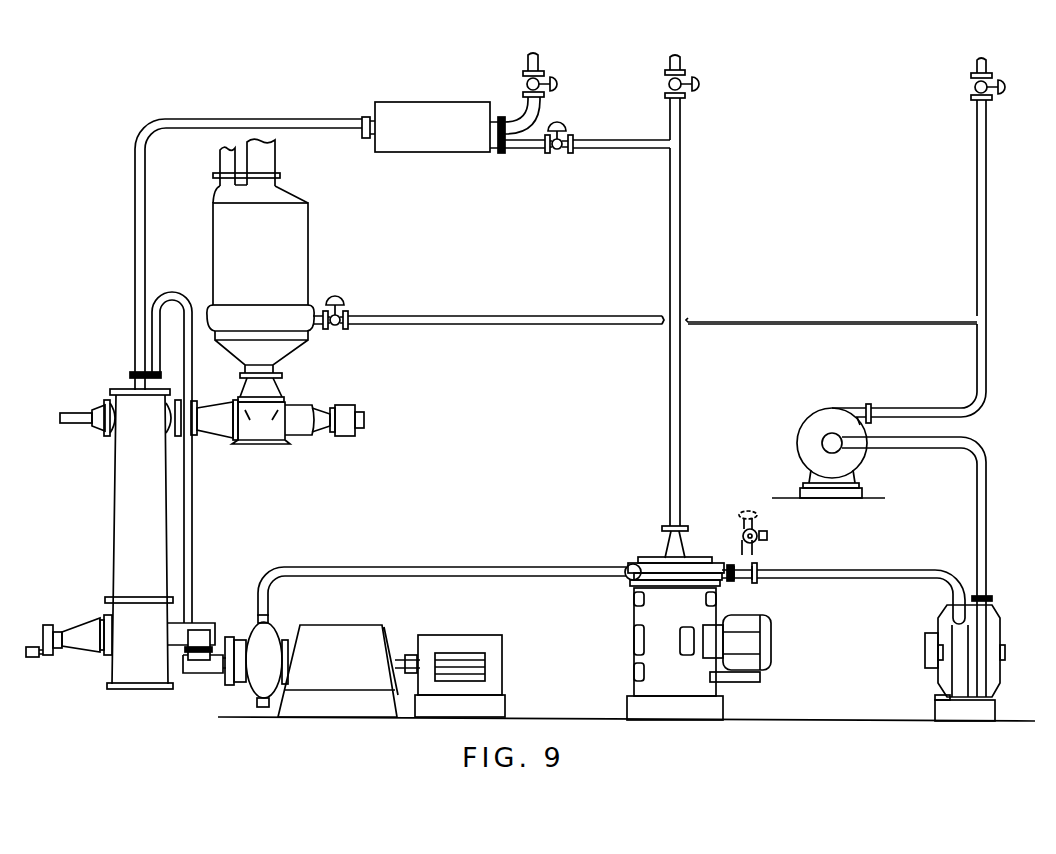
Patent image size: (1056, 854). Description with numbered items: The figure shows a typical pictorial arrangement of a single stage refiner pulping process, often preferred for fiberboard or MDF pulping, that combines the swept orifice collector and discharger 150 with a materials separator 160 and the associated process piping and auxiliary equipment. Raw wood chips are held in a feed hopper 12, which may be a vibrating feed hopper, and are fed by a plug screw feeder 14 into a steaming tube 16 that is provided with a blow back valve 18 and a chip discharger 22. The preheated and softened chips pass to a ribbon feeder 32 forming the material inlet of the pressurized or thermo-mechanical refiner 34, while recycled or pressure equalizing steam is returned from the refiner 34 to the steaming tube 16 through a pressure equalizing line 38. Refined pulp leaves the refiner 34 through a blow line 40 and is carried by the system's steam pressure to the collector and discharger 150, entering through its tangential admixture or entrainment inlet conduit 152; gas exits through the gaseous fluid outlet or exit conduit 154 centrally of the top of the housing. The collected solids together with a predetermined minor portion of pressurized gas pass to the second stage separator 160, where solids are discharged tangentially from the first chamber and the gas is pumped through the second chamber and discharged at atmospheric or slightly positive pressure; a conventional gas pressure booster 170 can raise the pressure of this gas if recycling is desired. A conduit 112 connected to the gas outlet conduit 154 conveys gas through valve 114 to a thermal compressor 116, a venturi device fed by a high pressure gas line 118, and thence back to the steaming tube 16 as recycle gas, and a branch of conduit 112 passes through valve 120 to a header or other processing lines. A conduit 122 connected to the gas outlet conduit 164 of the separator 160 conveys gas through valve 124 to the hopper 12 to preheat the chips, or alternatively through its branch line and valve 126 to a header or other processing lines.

The feed hopper 12 is at (308, 237).
The plug screw feeder 14 is at (313, 404).
The steaming tube 16 is at (116, 490).
The blow back valve 18 is at (100, 407).
The chip discharger 22 is at (91, 606).
The ribbon feeder 32 is at (213, 674).
The refiner 34 is at (278, 627).
The pressure equalizing line 38 is at (193, 489).
The blow line 40 is at (408, 566).
The conduit 112 is at (682, 406).
The valve 114 is at (565, 124).
The thermal compressor 116 is at (458, 102).
The high pressure gas line 118 is at (536, 121).
The valve 120 is at (700, 82).
The conduit 122 is at (988, 389).
The valve 124 is at (340, 299).
The valve 126 is at (1002, 82).
The swept orifice collector and discharger 150 is at (622, 588).
The tangential admixture or entrainment inlet conduit 152 is at (628, 566).
The gaseous fluid outlet or exit conduit 154 is at (683, 552).
The materials separator 160 is at (937, 612).
The gas outlet conduit 164 is at (990, 597).
The gas pressure booster 170 is at (828, 408).